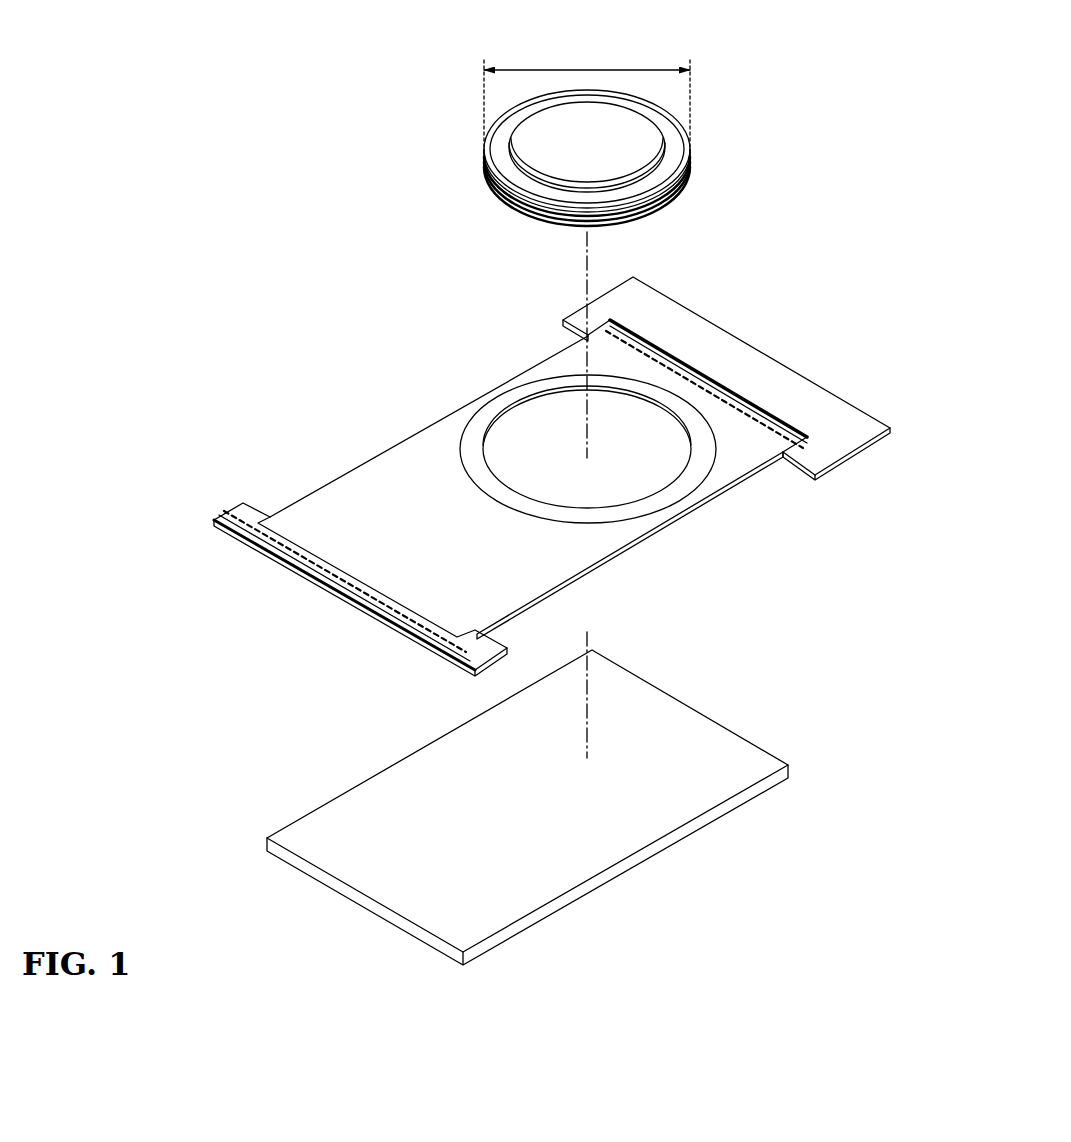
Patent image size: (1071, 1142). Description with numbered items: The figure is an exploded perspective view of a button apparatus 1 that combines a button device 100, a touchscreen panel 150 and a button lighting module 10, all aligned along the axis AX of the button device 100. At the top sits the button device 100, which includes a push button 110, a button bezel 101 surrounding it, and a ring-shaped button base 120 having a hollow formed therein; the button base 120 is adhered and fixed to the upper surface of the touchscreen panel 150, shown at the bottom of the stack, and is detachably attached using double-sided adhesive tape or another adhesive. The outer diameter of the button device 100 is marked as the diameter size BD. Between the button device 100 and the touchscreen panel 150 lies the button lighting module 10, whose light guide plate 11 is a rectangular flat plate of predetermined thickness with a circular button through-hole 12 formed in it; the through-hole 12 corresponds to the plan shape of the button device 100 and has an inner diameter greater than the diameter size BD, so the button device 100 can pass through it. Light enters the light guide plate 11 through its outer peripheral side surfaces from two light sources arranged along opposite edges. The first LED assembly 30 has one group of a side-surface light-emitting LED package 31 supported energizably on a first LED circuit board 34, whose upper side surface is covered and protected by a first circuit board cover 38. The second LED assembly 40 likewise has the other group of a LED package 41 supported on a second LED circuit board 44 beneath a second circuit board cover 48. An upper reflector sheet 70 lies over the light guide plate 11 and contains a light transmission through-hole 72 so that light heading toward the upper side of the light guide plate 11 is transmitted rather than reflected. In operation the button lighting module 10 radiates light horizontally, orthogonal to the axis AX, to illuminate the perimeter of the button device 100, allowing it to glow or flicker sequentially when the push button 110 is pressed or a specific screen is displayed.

The button apparatus 1 is at (305, 157).
The button lighting module 10 is at (280, 437).
The light guide plate 11 is at (740, 488).
The button through-hole 12 is at (632, 468).
The first LED assembly 30 is at (736, 358).
The LED package 31 is at (697, 385).
The first LED circuit board 34 is at (650, 342).
The first circuit board cover 38 is at (838, 410).
The second LED assembly 40 is at (337, 609).
The LED package 41 is at (310, 573).
The second LED circuit board 44 is at (226, 556).
The second circuit board cover 48 is at (468, 641).
The upper reflector sheet 70 is at (541, 487).
The light transmission through-hole 72 is at (597, 450).
The button device 100 is at (559, 133).
The button bezel 101 is at (683, 140).
The push button 110 is at (552, 125).
The button base 120 is at (500, 216).
The touchscreen panel 150 is at (608, 880).
The axis AX is at (590, 712).
The diameter size BD is at (587, 103).